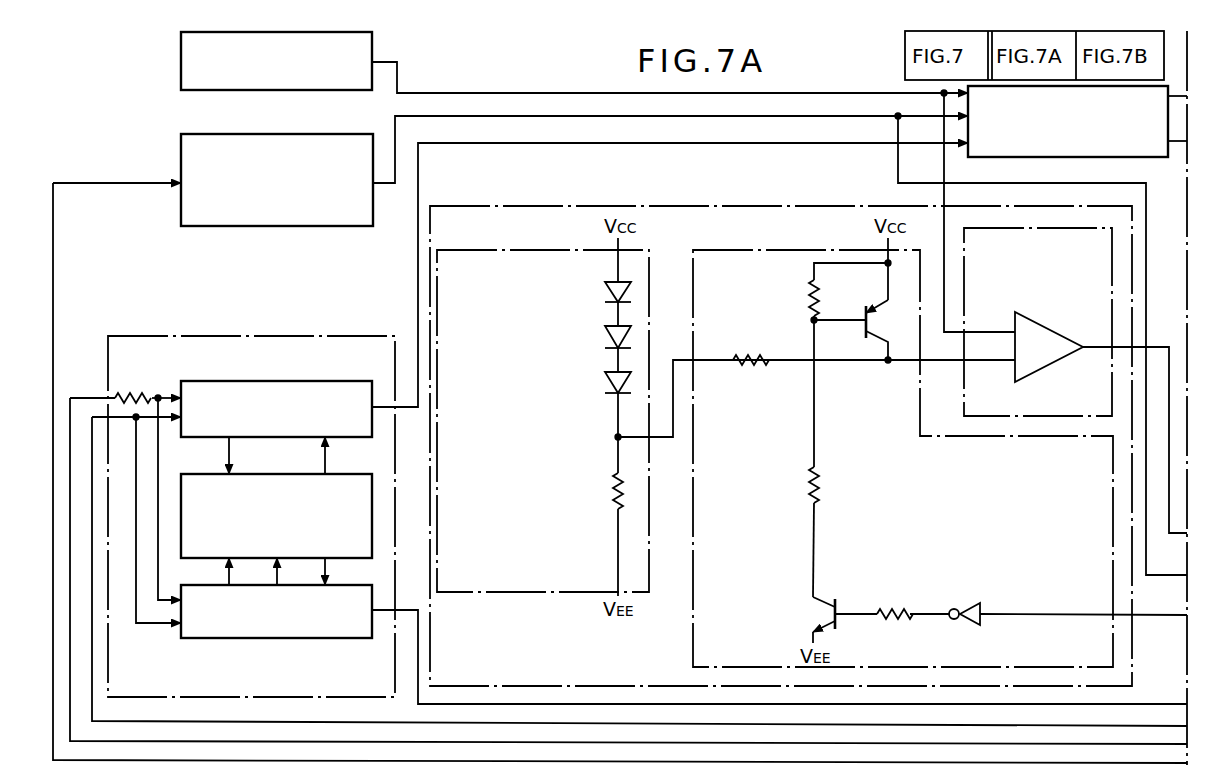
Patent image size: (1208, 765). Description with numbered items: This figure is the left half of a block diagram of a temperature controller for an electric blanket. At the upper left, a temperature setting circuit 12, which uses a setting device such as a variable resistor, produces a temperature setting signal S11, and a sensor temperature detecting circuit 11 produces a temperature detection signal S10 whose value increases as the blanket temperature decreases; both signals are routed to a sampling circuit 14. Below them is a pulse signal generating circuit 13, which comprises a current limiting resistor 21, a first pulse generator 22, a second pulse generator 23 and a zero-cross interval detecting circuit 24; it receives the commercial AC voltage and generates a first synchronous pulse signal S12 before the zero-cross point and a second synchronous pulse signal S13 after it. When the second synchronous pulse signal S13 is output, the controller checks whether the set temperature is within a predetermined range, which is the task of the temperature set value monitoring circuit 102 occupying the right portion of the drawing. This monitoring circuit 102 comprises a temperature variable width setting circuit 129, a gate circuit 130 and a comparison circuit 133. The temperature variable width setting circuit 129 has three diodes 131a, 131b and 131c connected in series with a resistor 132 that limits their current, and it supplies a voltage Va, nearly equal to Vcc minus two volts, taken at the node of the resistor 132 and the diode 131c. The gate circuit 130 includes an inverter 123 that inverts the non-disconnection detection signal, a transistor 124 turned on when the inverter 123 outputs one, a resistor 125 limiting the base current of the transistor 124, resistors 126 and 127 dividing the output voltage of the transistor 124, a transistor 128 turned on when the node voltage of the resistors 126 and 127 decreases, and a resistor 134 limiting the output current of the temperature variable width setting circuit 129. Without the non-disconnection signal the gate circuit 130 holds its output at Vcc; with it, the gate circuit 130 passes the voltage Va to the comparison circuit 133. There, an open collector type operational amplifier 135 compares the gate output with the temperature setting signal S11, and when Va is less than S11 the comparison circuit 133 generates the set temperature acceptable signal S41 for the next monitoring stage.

The sensor temperature detecting circuit 11 is at (180, 140).
The temperature setting circuit 12 is at (180, 62).
The pulse signal generating circuit 13 is at (395, 468).
The sampling circuit 14 is at (1130, 158).
The current limiting resistor 21 is at (136, 396).
The first pulse generator 22 is at (228, 381).
The second pulse generator 23 is at (340, 638).
The zero-cross interval detecting circuit 24 is at (210, 474).
The temperature set value monitoring circuit 102 is at (1134, 666).
The inverter 123 is at (956, 612).
The transistor 124 is at (855, 596).
The resistor 125 is at (900, 614).
The resistor 126 is at (810, 294).
The resistor 127 is at (810, 474).
The transistor 128 is at (884, 304).
The temperature variable width setting circuit 129 is at (554, 250).
The gate circuit 130 is at (790, 248).
The diode 131a is at (604, 294).
The diode 131b is at (604, 340).
The diode 131c is at (604, 378).
The resistor 132 is at (612, 470).
The comparison circuit 133 is at (964, 396).
The resistor 134 is at (748, 358).
The open collector type operational amplifier 135 is at (1060, 368).
The temperature detection signal S10 is at (466, 118).
The temperature setting signal S11 is at (466, 97).
The first synchronous pulse signal S12 is at (418, 288).
The second synchronous pulse signal S13 is at (779, 657).
The set temperature acceptable signal S41 is at (1178, 328).